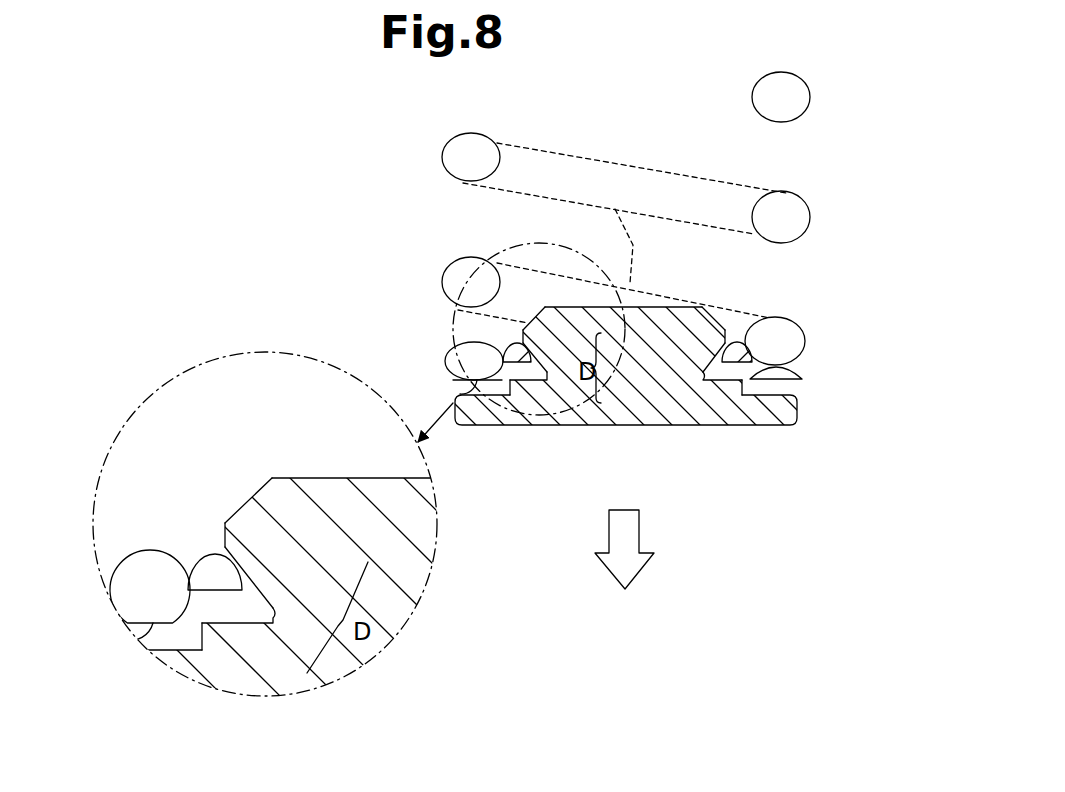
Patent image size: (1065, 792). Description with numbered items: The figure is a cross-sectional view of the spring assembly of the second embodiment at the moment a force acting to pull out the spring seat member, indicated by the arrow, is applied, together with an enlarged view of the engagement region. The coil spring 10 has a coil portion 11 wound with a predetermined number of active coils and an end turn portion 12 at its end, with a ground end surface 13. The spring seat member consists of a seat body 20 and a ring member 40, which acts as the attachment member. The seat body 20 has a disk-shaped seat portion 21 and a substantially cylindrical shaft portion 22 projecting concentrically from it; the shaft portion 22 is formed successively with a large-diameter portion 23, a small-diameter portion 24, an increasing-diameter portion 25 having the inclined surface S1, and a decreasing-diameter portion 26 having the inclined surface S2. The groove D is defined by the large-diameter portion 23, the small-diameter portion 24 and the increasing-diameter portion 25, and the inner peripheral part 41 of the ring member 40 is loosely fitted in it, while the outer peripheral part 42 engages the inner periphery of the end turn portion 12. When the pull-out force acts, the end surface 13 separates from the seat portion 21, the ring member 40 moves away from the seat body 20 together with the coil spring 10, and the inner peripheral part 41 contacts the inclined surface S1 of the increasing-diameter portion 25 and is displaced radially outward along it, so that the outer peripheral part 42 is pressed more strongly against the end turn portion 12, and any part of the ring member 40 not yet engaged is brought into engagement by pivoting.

The coil spring 10 is at (560, 148).
The coil portion 11 is at (637, 242).
The end turn portion 12 is at (449, 357).
The ground end surface 13 is at (462, 381).
The seat body 20 is at (655, 430).
The seat portion 21 is at (485, 420).
The shaft portion 22 is at (680, 308).
The large-diameter portion 23 is at (740, 396).
The small-diameter portion 24 is at (703, 385).
The increasing-diameter portion 25 is at (714, 362).
The decreasing-diameter portion 26 is at (718, 325).
The ring member 40 is at (500, 338).
The inner peripheral part 41 is at (722, 338).
The outer peripheral part 42 is at (793, 319).